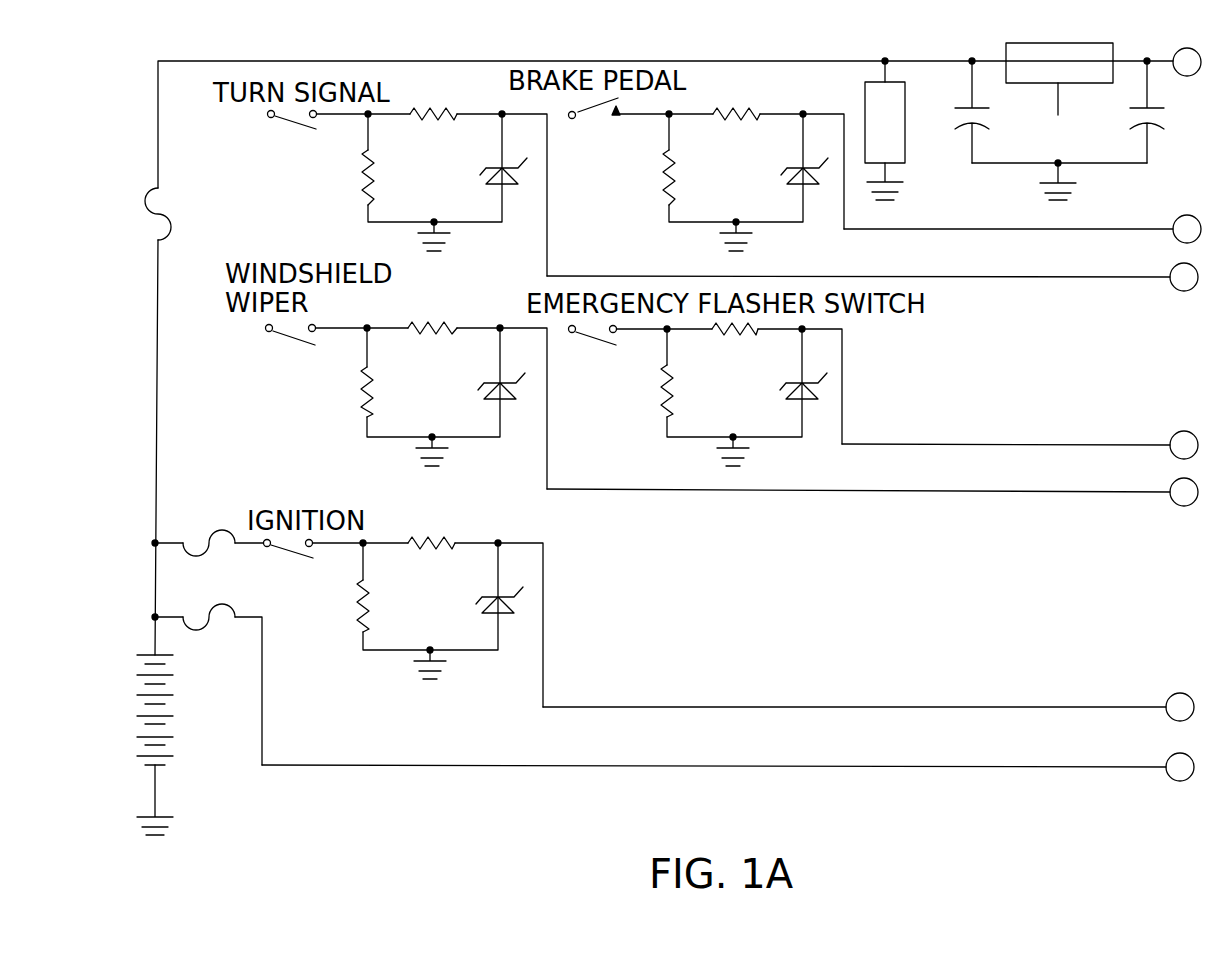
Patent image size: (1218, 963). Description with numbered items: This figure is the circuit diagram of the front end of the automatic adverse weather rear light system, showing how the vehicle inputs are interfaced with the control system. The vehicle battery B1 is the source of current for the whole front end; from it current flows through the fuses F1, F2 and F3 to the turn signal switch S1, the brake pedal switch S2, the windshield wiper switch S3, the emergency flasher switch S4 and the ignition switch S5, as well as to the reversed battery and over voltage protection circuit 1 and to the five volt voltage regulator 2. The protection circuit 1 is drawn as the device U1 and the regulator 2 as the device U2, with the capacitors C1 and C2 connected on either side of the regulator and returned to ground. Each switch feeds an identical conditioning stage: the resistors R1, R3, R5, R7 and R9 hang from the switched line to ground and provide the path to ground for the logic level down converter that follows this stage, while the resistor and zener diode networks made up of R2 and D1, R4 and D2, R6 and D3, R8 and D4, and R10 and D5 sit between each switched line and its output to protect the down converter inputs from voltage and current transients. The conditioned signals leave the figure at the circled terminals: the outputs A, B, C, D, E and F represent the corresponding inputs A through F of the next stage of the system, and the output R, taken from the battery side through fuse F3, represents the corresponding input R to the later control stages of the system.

The fuse F1 is at (177, 214).
The fuse F2 is at (209, 530).
The fuse F3 is at (209, 603).
The turn signal switch S1 is at (292, 136).
The brake pedal switch S2 is at (595, 124).
The windshield wiper switch S3 is at (291, 350).
The emergency flasher switch S4 is at (593, 351).
The ignition switch S5 is at (289, 565).
The resistor R1 is at (347, 177).
The resistor R2 is at (433, 128).
The resistor R3 is at (647, 177).
The resistor R4 is at (736, 129).
The resistor R5 is at (345, 392).
The resistor R6 is at (432, 342).
The resistor R7 is at (645, 391).
The resistor R8 is at (735, 342).
The resistor R9 is at (342, 606).
The resistor R10 is at (432, 557).
The zener diode D1 is at (481, 173).
The zener diode D2 is at (781, 173).
The zener diode D3 is at (477, 387).
The zener diode D4 is at (780, 387).
The zener diode D5 is at (475, 602).
The integrated circuit U1 is at (885, 112).
The voltage regulator U2 is at (1059, 93).
The reversed battery and over voltage protection circuit 1 is at (907, 122).
The 5 volt voltage regulator 2 is at (1058, 113).
The capacitor C1 is at (992, 112).
The capacitor C2 is at (1128, 112).
The vehicle battery B1 is at (178, 710).
The output A is at (1187, 62).
The output B is at (1022, 229).
The output C is at (872, 277).
The output D is at (1020, 445).
The output E is at (872, 492).
The output F is at (868, 707).
The output R is at (728, 767).